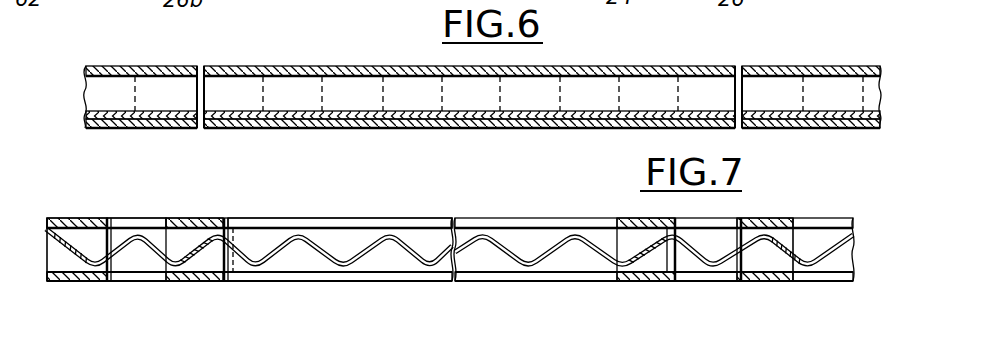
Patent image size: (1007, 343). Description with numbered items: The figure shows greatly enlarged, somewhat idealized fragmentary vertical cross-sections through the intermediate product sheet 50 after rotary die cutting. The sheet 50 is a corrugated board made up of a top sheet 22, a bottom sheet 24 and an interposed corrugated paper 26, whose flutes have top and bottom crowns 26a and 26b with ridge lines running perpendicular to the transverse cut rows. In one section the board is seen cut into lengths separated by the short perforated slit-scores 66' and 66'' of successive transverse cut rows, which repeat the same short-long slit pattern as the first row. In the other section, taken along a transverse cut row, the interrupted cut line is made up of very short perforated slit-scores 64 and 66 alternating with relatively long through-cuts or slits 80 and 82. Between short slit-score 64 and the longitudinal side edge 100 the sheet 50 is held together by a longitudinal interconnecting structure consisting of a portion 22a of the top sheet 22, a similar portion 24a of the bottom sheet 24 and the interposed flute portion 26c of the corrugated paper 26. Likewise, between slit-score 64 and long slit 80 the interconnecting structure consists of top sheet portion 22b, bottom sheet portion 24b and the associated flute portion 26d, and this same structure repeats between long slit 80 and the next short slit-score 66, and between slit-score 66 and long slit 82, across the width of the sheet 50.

In FIG. 6, the intermediate product sheet 50 is at (76, 96).
In FIG. 7, the intermediate product sheet 50 is at (62, 210).
In FIG. 6, the top sheet 22 is at (168, 62).
In FIG. 7, the top sheet 22 is at (450, 207).
In FIG. 6, the bottom sheet 24 is at (587, 131).
In FIG. 7, the bottom sheet 24 is at (450, 303).
In FIG. 6, the corrugated paper 26 is at (476, 122).
In FIG. 7, the corrugated paper 26 is at (294, 248).
In FIG. 6, the short perforated slit-score 66' is at (224, 97).
In FIG. 6, the short perforated slit-score 66'' is at (763, 97).
In FIG. 7, the short perforated slit-score 66 is at (724, 233).
In FIG. 7, the portion of top sheet 22a is at (77, 218).
In FIG. 7, the portion of top paper sheet 22b is at (214, 219).
In FIG. 7, the portion of bottom sheet 24a is at (97, 282).
In FIG. 7, the portion of bottom paper sheet 24b is at (212, 283).
In FIG. 7, the crown of flute 26a is at (388, 232).
In FIG. 7, the crown of flute 26b is at (437, 270).
In FIG. 7, the flute portion 26c is at (54, 263).
In FIG. 7, the flute portion 26d is at (196, 262).
In FIG. 7, the short perforated slit-score 64 is at (133, 218).
In FIG. 7, the long slit 80 is at (324, 222).
In FIG. 7, the long slit 82 is at (815, 224).
In FIG. 7, the longitudinal side edge 100 is at (48, 255).